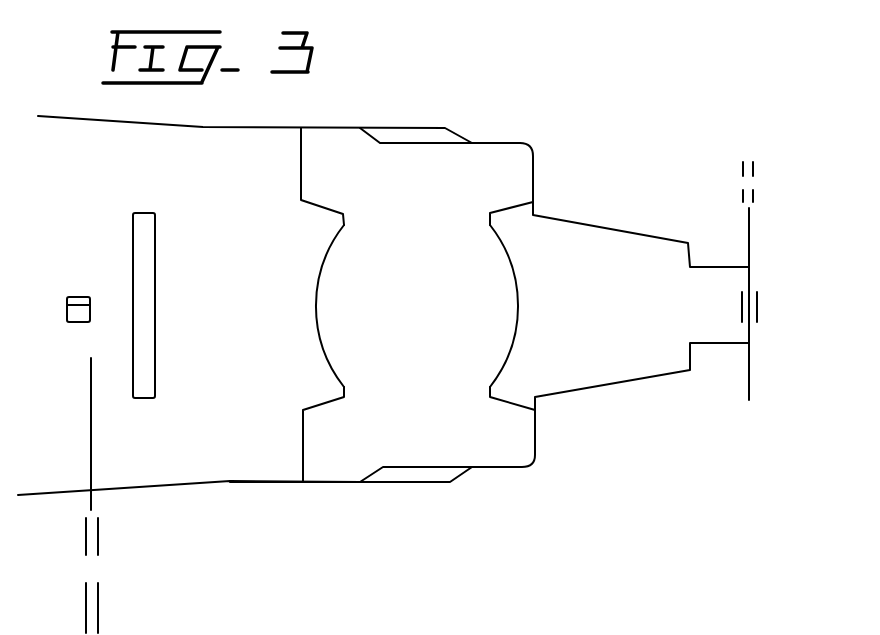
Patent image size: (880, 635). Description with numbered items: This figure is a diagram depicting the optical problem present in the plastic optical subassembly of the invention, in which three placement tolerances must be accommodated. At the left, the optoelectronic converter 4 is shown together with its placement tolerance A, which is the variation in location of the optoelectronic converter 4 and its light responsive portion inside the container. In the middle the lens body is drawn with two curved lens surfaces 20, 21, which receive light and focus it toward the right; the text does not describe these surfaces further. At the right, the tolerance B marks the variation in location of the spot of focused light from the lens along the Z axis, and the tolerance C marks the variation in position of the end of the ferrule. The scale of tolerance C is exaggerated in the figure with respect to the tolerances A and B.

The optoelectronic converter 4 is at (67, 305).
The first lens surface 20 is at (324, 352).
The second lens surface 21 is at (515, 332).
The placement tolerance A is at (115, 626).
The tolerance B is at (772, 308).
The tolerance C is at (815, 170).